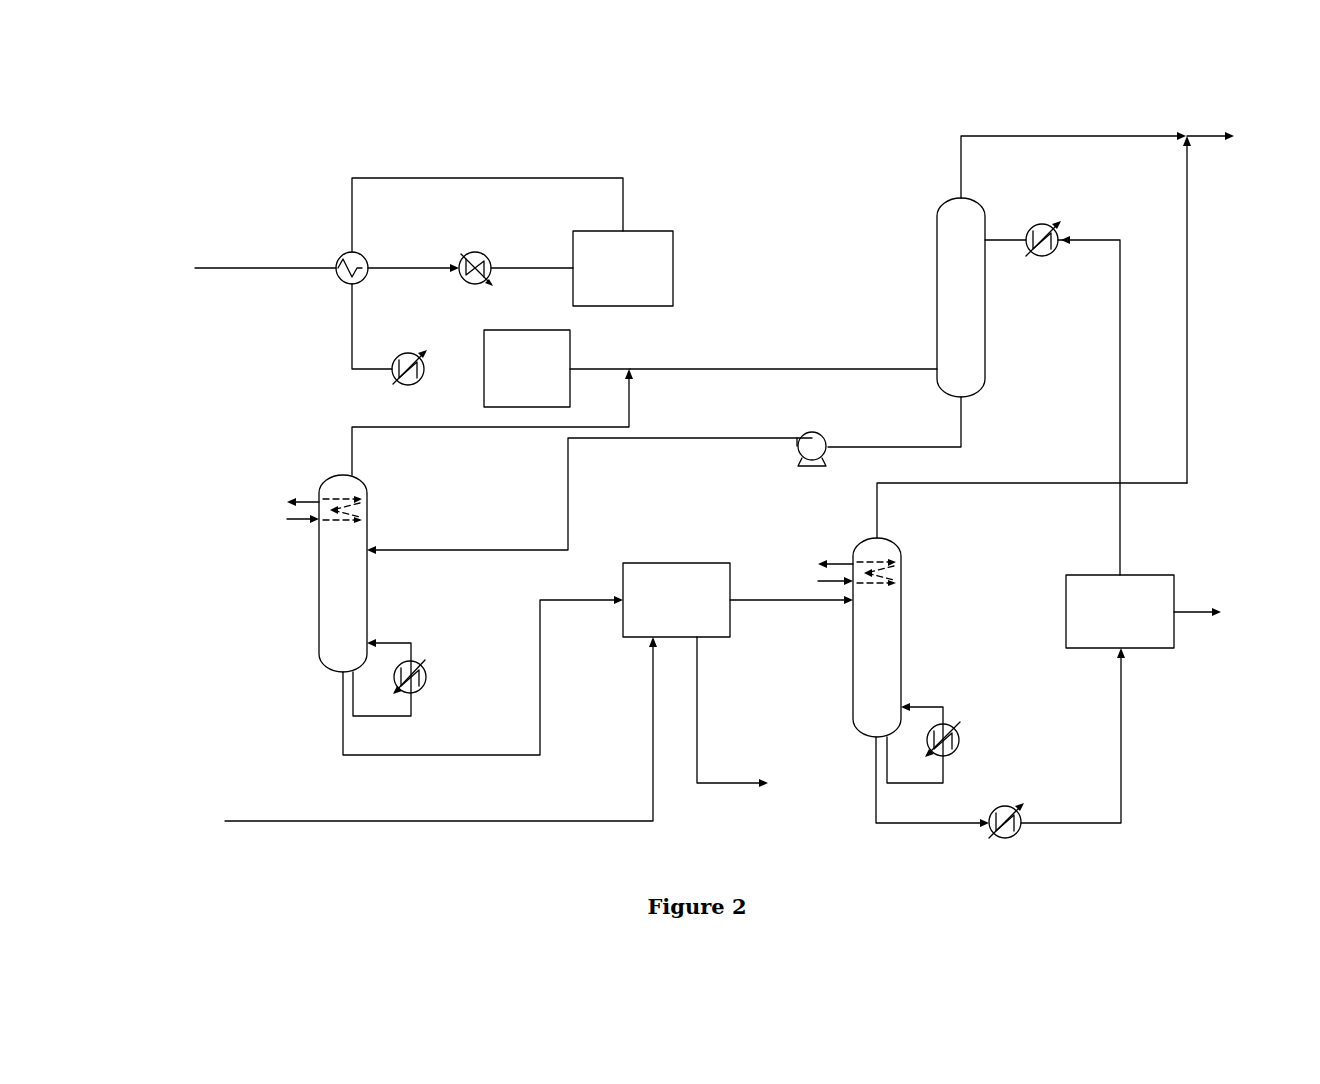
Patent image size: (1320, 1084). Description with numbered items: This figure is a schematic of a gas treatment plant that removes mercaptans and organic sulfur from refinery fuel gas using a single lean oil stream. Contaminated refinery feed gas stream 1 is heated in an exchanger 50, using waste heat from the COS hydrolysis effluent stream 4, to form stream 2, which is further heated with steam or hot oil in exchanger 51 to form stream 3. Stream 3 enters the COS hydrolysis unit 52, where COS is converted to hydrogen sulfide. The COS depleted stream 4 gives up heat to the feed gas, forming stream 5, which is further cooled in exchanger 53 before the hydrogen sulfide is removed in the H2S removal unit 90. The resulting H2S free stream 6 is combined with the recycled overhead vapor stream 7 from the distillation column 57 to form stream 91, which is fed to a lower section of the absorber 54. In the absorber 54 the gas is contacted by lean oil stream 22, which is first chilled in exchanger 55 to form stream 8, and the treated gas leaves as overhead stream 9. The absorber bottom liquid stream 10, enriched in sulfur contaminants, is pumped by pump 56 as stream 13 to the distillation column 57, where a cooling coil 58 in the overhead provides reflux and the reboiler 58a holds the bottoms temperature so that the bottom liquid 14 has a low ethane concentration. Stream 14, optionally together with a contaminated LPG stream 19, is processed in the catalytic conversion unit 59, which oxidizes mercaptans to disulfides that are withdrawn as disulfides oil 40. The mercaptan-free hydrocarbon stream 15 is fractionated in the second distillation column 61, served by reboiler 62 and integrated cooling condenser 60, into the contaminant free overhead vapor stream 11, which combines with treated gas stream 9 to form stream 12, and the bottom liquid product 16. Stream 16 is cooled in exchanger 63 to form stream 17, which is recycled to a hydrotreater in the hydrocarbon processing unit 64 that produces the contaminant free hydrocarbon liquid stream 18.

The contaminated refinery feed gas stream 1 is at (247, 268).
The stream 2 is at (412, 268).
The stream 3 is at (522, 268).
The COS hydrolysis effluent stream 4 is at (565, 178).
The stream 5 is at (354, 323).
The H2S free stream 6 is at (612, 369).
The overhead vapor stream 7 is at (630, 415).
The stream 8 is at (1000, 240).
The treated gas stream 9 is at (993, 136).
The bottom liquid stream 10 is at (896, 446).
The contaminant free overhead vapor stream 11 is at (992, 486).
The stream 12 is at (1220, 136).
The stream 13 is at (717, 438).
The bottom liquid 14 is at (540, 689).
The hydrocarbon stream 15 is at (771, 600).
The bottom liquid product 16 is at (876, 784).
The stream 17 is at (1121, 758).
The contaminant free C6+ hydrocarbon liquid stream 18 is at (1199, 618).
The contaminated LPG stream 19 is at (282, 821).
The lean oil stream 22 is at (1117, 402).
The disulfides oil 40 is at (714, 783).
The exchanger 50 is at (363, 258).
The exchanger 51 is at (481, 258).
The COS hydrolysis unit 52 is at (673, 280).
The exchanger 53 is at (412, 351).
The absorber 54 is at (937, 217).
The exchanger 55 is at (1046, 258).
The pump 56 is at (809, 432).
The distillation column 57 is at (369, 493).
The cooling coil 58 is at (320, 502).
The reboiler 58a is at (428, 678).
The catalytic conversion unit 59 is at (656, 563).
The integrated cooling condenser 60 is at (830, 564).
The second distillation column 61 is at (903, 641).
The reboiler 62 is at (960, 739).
The exchanger 63 is at (1011, 799).
The hydrocarbon processing unit 64 is at (1174, 577).
The H2S removal unit 90 is at (572, 348).
The stream 91 is at (709, 369).